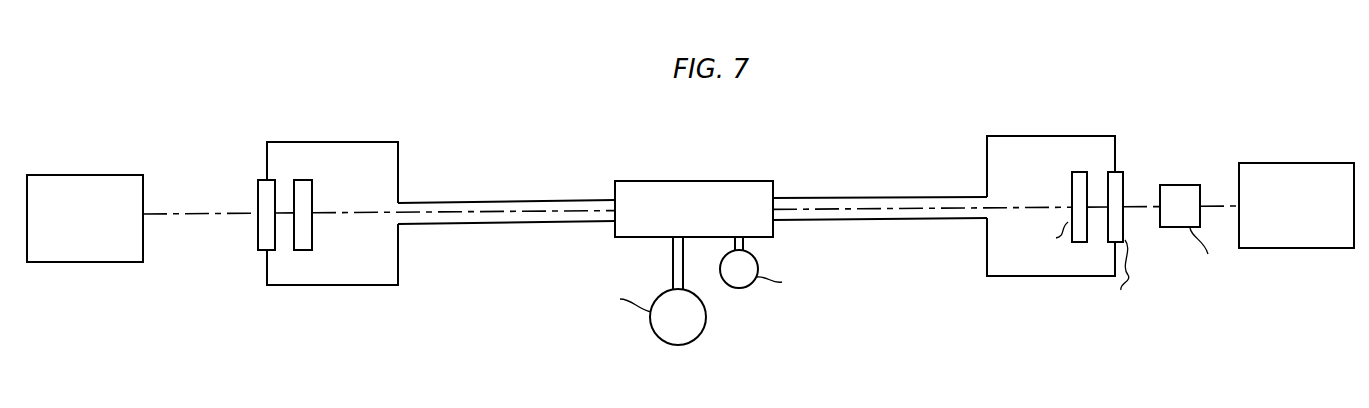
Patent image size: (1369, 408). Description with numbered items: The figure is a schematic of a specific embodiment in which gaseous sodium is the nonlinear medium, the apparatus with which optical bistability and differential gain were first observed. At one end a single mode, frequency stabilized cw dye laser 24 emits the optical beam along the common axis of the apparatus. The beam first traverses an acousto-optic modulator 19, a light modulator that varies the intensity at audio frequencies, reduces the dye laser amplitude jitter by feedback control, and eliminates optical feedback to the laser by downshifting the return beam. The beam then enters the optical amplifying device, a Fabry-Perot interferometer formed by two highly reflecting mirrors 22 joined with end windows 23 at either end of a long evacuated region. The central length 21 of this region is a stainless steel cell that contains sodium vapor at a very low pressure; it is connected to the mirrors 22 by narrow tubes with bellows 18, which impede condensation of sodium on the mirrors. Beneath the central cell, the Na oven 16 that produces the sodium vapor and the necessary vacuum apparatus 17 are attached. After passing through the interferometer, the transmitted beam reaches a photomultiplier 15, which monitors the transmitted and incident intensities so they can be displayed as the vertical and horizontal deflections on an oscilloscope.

The photomultiplier 15 is at (92, 175).
The Na oven 16 is at (758, 263).
The vacuum apparatus 17 is at (707, 327).
The tubes with bellows 18 is at (503, 202).
The acousto-optic modulator 19 is at (1182, 185).
The central length containing Na vapor 21 is at (708, 181).
The reflecting mirrors 22 is at (312, 180).
The end windows 23 is at (258, 182).
The dye laser 24 is at (1297, 163).